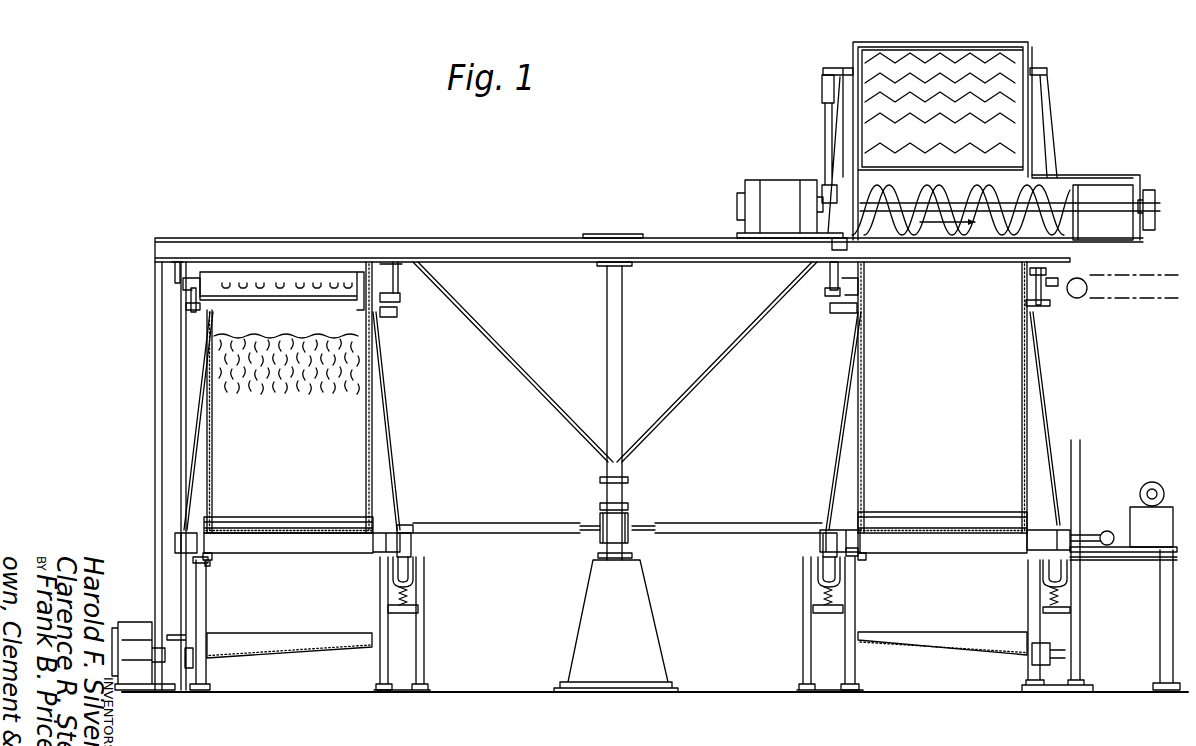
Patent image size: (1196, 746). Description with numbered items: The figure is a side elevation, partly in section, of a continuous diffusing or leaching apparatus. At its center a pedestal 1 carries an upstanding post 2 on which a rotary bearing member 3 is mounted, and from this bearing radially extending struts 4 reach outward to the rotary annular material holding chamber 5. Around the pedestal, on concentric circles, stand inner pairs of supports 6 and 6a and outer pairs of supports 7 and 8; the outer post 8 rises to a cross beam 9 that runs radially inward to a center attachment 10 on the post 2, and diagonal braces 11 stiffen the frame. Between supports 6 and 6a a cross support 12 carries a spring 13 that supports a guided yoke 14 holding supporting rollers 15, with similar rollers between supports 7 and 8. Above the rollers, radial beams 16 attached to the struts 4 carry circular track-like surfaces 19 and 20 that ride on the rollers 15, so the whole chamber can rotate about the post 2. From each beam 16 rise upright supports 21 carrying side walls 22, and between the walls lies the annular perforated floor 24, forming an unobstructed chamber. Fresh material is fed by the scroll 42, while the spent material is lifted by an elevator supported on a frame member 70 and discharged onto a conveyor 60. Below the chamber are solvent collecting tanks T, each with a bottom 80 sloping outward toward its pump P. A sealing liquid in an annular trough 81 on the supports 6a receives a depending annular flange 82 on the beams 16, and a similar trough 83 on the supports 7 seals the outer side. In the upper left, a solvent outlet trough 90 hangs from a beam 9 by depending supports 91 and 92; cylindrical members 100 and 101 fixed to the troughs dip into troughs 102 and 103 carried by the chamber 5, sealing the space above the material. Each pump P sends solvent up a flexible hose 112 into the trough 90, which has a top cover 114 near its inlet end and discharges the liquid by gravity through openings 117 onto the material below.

The pedestal 1 is at (641, 622).
The upstanding post 2 is at (623, 358).
The rotary bearing member 3 is at (632, 522).
The radially extending struts 4 is at (513, 526).
The material holding chamber 5 is at (379, 393).
The support 6 is at (422, 628).
The support 6a is at (389, 655).
The support 7 is at (207, 604).
The outer post 8 is at (157, 593).
The cross beam 9 is at (479, 250).
The center attachment 10 is at (611, 234).
The diagonal braces 11 is at (490, 341).
The cross support 12 is at (409, 608).
The spring 13 is at (409, 592).
The guided yoke 14 is at (413, 571).
The supporting rollers 15 is at (408, 555).
The radial beams 16 is at (313, 552).
The track-like surface 19 is at (176, 551).
The track-like surface 20 is at (842, 528).
The upright supports 21 is at (200, 440).
The side walls 22 is at (214, 468).
The perforated floor 24 is at (284, 519).
The scroll 42 is at (1036, 200).
The conveyor 60 is at (1156, 278).
The frame member 70 is at (1040, 124).
The tank bottom 80 is at (278, 647).
The annular trough 81 is at (864, 560).
The depending annular flange 82 is at (848, 550).
The trough 83 is at (210, 562).
The solvent outlet trough 90 is at (342, 304).
The depending support 91 is at (175, 270).
The depending support 92 is at (402, 272).
The cylindrical member 100 is at (399, 301).
The cylindrical member 101 is at (189, 298).
The trough 102 is at (398, 314).
The liquid holding trough 103 is at (192, 306).
The flexible hose 112 is at (180, 377).
The top cover 114 is at (182, 284).
The openings 117 is at (300, 280).
The pump P is at (183, 678).
The solvent collecting tank T is at (291, 615).